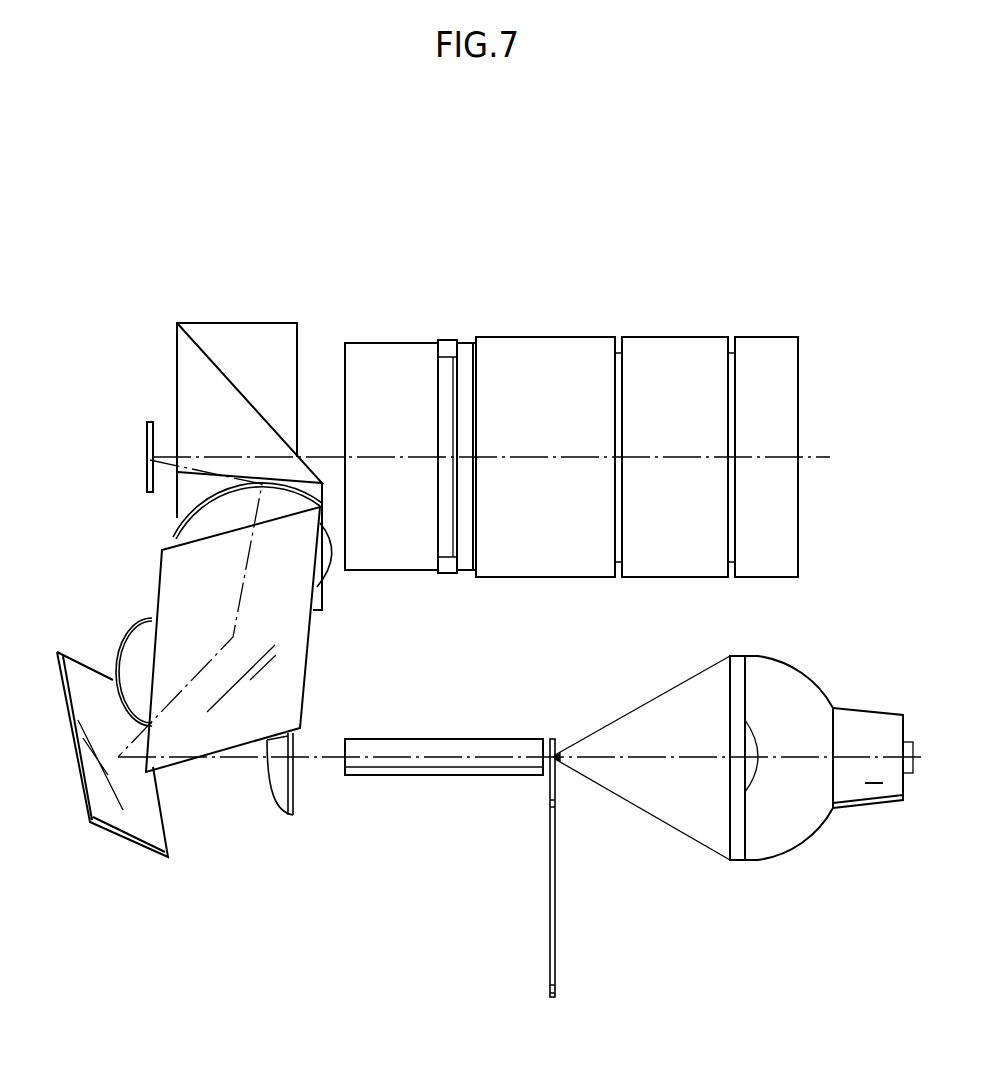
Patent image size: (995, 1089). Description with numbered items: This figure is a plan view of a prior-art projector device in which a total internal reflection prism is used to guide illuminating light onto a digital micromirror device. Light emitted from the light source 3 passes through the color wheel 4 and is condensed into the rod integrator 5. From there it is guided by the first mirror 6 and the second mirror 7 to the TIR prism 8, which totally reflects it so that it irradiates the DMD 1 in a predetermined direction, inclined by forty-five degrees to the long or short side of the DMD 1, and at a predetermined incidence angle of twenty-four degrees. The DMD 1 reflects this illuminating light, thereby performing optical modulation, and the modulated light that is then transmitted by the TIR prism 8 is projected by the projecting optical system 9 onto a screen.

The DMD 1 is at (147, 427).
The light source 3 is at (788, 830).
The color wheel 4 is at (557, 973).
The rod integrator 5 is at (453, 777).
The first mirror 6 is at (225, 732).
The second mirror 7 is at (142, 830).
The TIR prism 8 is at (252, 338).
The projecting optical system 9 is at (577, 352).